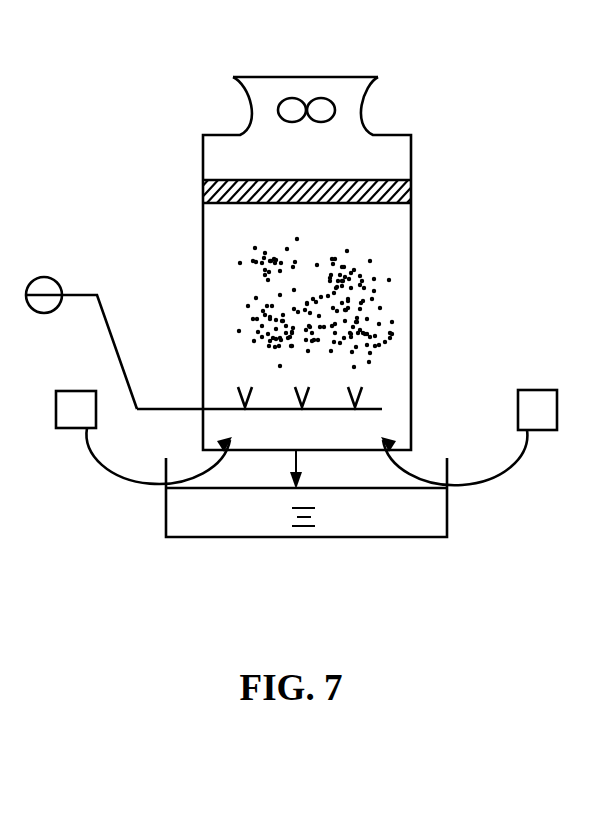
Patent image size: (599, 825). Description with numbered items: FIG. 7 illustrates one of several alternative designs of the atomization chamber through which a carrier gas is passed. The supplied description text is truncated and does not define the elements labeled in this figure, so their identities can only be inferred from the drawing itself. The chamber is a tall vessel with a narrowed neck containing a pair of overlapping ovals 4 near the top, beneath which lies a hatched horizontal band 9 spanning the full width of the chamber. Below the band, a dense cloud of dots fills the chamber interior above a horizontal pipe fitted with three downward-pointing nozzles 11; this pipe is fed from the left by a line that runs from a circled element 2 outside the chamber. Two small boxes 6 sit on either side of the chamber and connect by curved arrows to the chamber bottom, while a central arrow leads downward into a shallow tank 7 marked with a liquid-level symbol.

The pump 2 is at (81, 343).
The stirrer 4 is at (332, 103).
The collector 6 is at (306, 437).
The collection tank 7 is at (397, 517).
The filter plate 9 is at (410, 183).
The spray nozzles 11 is at (358, 393).